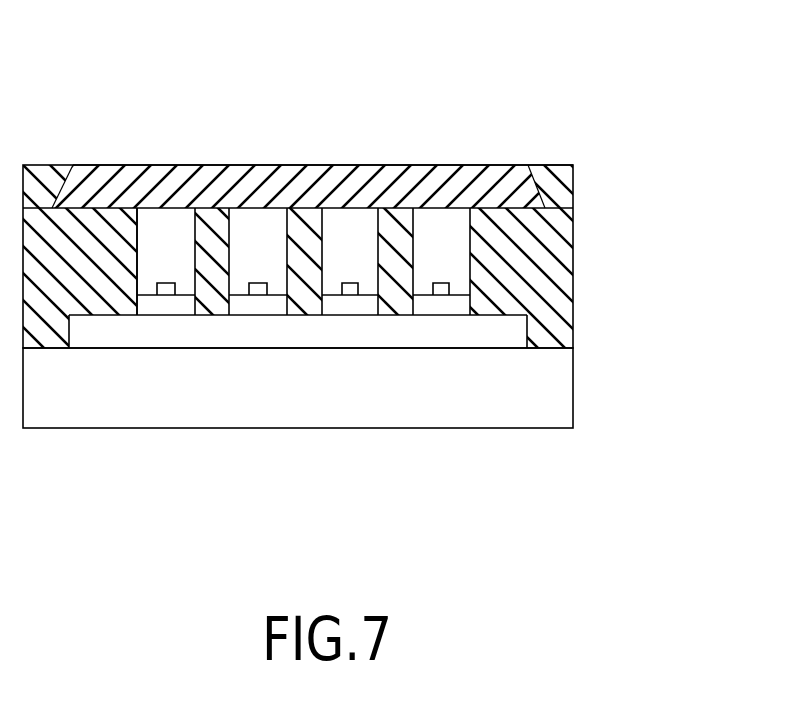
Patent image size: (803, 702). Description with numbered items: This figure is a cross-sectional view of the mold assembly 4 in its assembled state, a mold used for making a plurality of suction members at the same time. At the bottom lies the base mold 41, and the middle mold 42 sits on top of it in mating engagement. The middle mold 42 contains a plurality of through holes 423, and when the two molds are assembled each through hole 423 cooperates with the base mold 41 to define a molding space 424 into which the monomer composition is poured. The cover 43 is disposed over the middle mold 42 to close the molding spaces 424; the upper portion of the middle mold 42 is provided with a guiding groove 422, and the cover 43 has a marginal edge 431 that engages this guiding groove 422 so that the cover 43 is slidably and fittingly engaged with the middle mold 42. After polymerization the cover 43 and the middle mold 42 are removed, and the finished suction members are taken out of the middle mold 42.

The mold assembly 4 is at (573, 43).
The base mold 41 is at (537, 428).
The middle mold 42 is at (575, 253).
The cover 43 is at (427, 200).
The guiding groove 422 is at (526, 176).
The through hole 423 is at (137, 230).
The molding space 424 is at (168, 252).
The marginal edge 431 is at (523, 195).